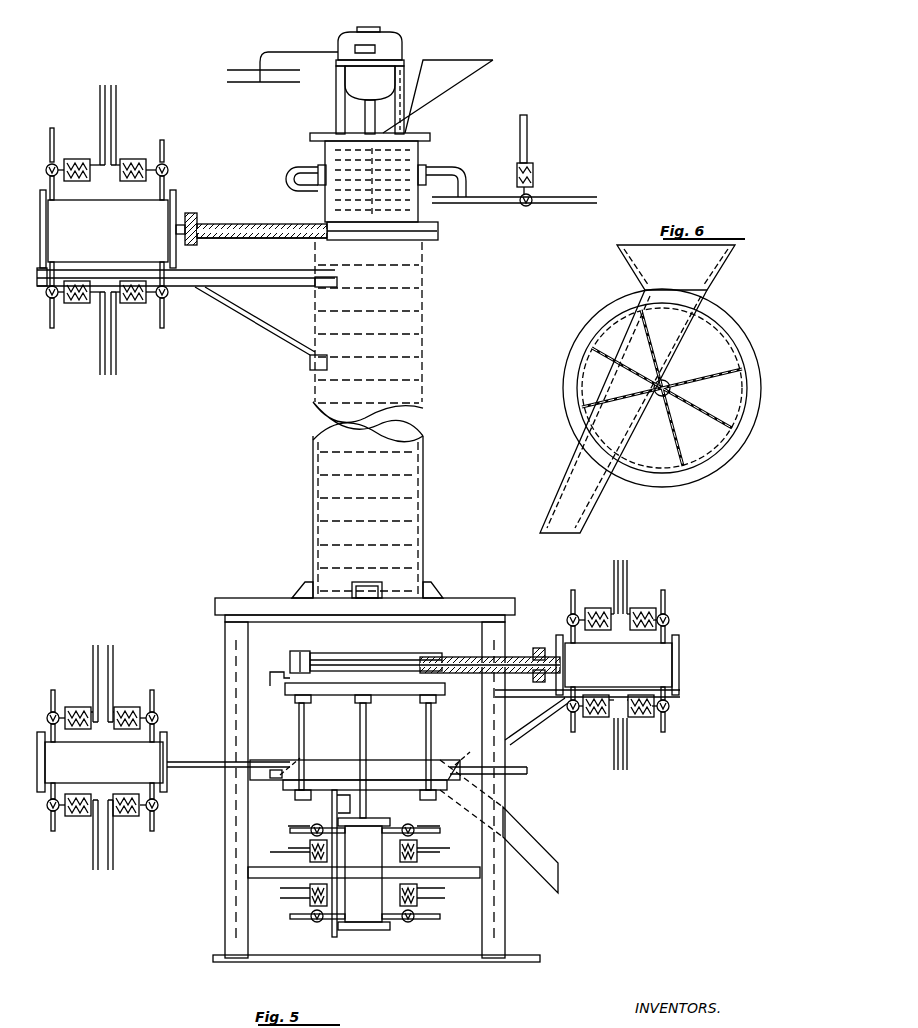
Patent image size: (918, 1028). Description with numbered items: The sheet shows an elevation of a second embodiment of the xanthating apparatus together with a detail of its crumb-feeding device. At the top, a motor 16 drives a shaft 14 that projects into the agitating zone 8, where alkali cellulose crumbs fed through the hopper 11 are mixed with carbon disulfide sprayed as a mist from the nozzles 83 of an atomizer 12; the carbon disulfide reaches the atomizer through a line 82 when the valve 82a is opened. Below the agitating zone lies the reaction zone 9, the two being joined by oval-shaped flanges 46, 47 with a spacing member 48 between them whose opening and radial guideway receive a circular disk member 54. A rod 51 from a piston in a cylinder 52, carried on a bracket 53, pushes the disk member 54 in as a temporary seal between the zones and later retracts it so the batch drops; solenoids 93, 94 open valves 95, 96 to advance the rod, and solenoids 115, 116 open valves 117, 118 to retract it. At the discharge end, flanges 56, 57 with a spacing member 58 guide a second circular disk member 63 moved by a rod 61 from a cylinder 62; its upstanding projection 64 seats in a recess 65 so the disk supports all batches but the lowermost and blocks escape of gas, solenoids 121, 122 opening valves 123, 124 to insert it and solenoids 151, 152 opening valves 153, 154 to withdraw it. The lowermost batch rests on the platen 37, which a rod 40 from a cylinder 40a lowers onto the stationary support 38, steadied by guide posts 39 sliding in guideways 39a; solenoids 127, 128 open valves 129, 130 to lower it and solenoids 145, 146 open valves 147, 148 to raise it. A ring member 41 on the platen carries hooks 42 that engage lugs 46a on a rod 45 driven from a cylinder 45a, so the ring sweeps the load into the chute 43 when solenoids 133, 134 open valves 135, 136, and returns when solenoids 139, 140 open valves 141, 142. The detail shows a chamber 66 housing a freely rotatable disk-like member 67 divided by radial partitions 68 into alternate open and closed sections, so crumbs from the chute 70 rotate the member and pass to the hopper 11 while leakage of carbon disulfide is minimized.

In FIG. 5, the agitating zone 8 is at (420, 150).
In FIG. 5, the reaction zone 9 is at (443, 346).
In FIG. 5, the hopper 11 is at (480, 62).
In FIG. 6, the hopper 11 is at (568, 442).
In FIG. 5, the atomizer 12 is at (316, 172).
In FIG. 5, the shaft 14 is at (360, 112).
In FIG. 5, the motor 16 is at (355, 35).
In FIG. 5, the platen 37 is at (378, 690).
In FIG. 5, the stationary support 38 is at (385, 780).
In FIG. 5, the guide posts 39 is at (305, 728).
In FIG. 5, the guideways 39a is at (292, 781).
In FIG. 5, the rod 40 is at (366, 745).
In FIG. 5, the cylinder 40a is at (368, 915).
In FIG. 5, the ring member 41 is at (342, 688).
In FIG. 5, the hooks 42 is at (272, 680).
In FIG. 5, the chute 43 is at (512, 815).
In FIG. 5, the rod 45 is at (205, 762).
In FIG. 5, the cylinder 45a is at (152, 768).
In FIG. 5, the oval-shaped flange 46 is at (300, 224).
In FIG. 5, the lugs 46a is at (276, 770).
In FIG. 5, the oval-shaped flange 47 is at (300, 240).
In FIG. 5, the spacing member 48 is at (440, 232).
In FIG. 5, the rod 51 is at (186, 246).
In FIG. 5, the cylinder 52 is at (176, 200).
In FIG. 5, the bracket 53 is at (258, 320).
In FIG. 5, the circular disk member 54 is at (255, 224).
In FIG. 5, the flange 56 is at (510, 656).
In FIG. 5, the flange 57 is at (473, 674).
In FIG. 5, the spacing member 58 is at (290, 662).
In FIG. 5, the rod 61 is at (556, 652).
In FIG. 5, the cylinder 62 is at (672, 660).
In FIG. 5, the circular disk member 63 is at (446, 657).
In FIG. 5, the upstanding projection 64 is at (412, 657).
In FIG. 5, the recess 65 is at (304, 652).
In FIG. 6, the chamber 66 is at (752, 360).
In FIG. 6, the disk-like member 67 is at (591, 463).
In FIG. 6, the partitions 68 is at (600, 350).
In FIG. 6, the chute 70 is at (726, 270).
In FIG. 5, the pipe 82 is at (534, 176).
In FIG. 5, the valve 82a is at (532, 206).
In FIG. 5, the nozzles 83 is at (324, 160).
In FIG. 5, the solenoid 93 is at (76, 158).
In FIG. 5, the solenoid 94 is at (130, 305).
In FIG. 5, the valve 95 is at (46, 165).
In FIG. 5, the valve 96 is at (168, 300).
In FIG. 5, the solenoid 115 is at (133, 158).
In FIG. 5, the solenoid 116 is at (76, 305).
In FIG. 5, the valve 117 is at (170, 168).
In FIG. 5, the valve 118 is at (48, 302).
In FIG. 5, the solenoid 121 is at (640, 608).
In FIG. 5, the solenoid 122 is at (596, 718).
In FIG. 5, the valve 123 is at (670, 618).
In FIG. 5, the valve 124 is at (568, 714).
In FIG. 5, the solenoid 127 is at (305, 905).
In FIG. 5, the solenoid 128 is at (418, 848).
In FIG. 5, the valve 129 is at (312, 920).
In FIG. 5, the valve 130 is at (416, 826).
In FIG. 5, the solenoid 133 is at (77, 707).
In FIG. 5, the solenoid 134 is at (126, 816).
In FIG. 5, the valve 135 is at (48, 714).
In FIG. 5, the valve 136 is at (158, 808).
In FIG. 5, the solenoid 139 is at (126, 707).
In FIG. 5, the solenoid 140 is at (76, 816).
In FIG. 5, the valve 141 is at (158, 714).
In FIG. 5, the valve 142 is at (50, 811).
In FIG. 5, the solenoid 145 is at (420, 900).
In FIG. 5, the solenoid 146 is at (308, 846).
In FIG. 5, the valve 147 is at (415, 920).
In FIG. 5, the valve 148 is at (312, 826).
In FIG. 5, the solenoid 151 is at (596, 608).
In FIG. 5, the solenoid 152 is at (638, 718).
In FIG. 5, the valve 153 is at (568, 614).
In FIG. 5, the valve 154 is at (670, 712).